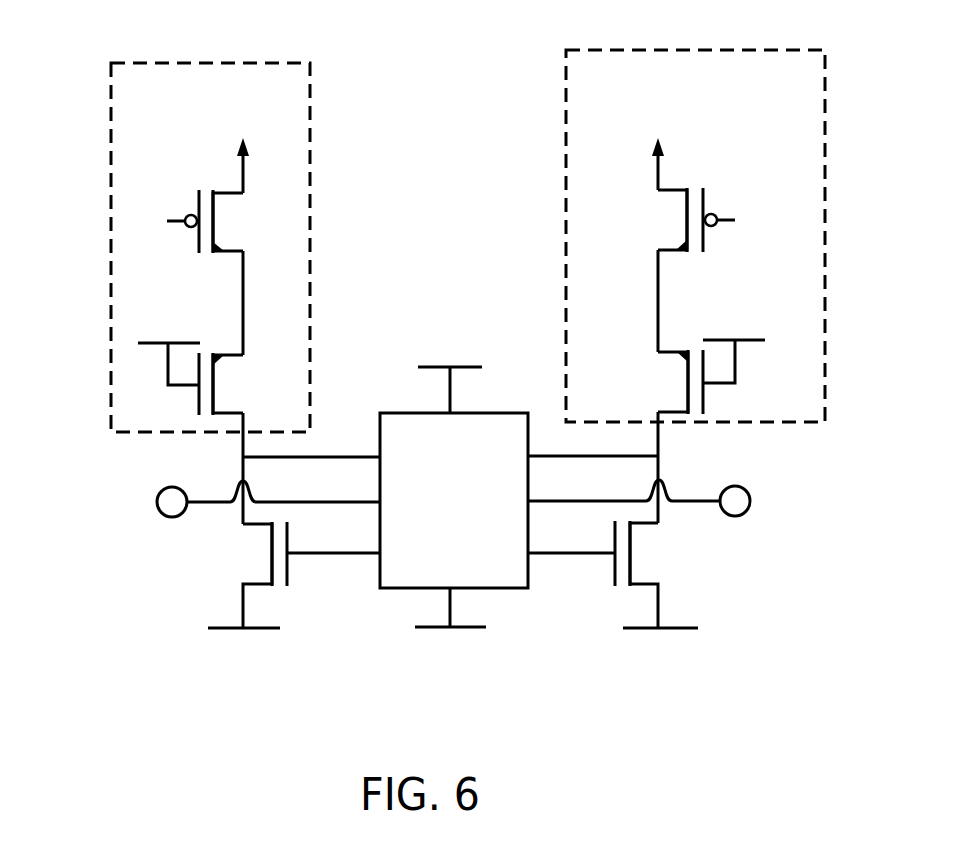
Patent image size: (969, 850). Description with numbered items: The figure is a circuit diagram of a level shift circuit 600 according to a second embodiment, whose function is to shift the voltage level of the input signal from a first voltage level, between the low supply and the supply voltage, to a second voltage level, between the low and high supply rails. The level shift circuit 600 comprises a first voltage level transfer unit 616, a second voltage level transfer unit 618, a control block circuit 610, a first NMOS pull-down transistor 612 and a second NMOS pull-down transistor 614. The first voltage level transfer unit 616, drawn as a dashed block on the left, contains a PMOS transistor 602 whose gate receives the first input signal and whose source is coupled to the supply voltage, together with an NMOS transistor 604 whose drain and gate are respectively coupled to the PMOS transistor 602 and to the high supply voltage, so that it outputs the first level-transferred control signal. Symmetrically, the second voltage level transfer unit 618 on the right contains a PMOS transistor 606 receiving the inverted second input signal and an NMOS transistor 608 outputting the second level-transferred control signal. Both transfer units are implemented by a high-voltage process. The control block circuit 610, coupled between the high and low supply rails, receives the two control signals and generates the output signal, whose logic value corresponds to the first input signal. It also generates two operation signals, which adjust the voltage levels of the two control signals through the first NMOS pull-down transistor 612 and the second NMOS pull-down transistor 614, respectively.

The level shift circuit 600 is at (450, 34).
The PMOS transistor 602 is at (195, 188).
The NMOS transistor 604 is at (215, 315).
The PMOS transistor 606 is at (705, 178).
The NMOS transistor 608 is at (685, 315).
The control block circuit 610 is at (454, 501).
The first NMOS pull-down transistor 612 is at (250, 546).
The second NMOS pull-down transistor 614 is at (666, 548).
The first voltage level transfer unit 616 is at (167, 87).
The second voltage level transfer unit 618 is at (772, 84).